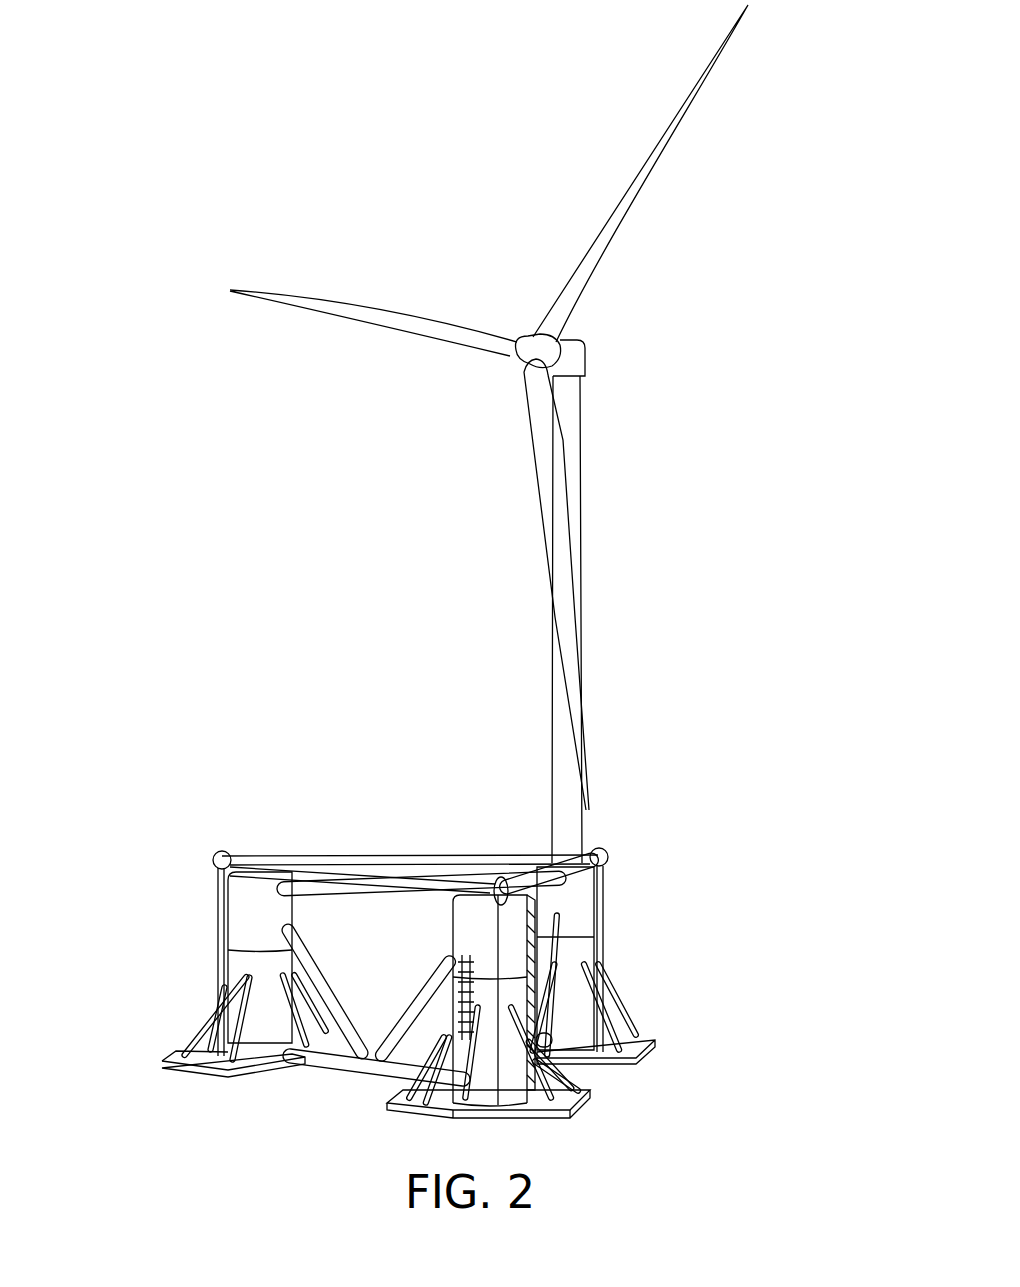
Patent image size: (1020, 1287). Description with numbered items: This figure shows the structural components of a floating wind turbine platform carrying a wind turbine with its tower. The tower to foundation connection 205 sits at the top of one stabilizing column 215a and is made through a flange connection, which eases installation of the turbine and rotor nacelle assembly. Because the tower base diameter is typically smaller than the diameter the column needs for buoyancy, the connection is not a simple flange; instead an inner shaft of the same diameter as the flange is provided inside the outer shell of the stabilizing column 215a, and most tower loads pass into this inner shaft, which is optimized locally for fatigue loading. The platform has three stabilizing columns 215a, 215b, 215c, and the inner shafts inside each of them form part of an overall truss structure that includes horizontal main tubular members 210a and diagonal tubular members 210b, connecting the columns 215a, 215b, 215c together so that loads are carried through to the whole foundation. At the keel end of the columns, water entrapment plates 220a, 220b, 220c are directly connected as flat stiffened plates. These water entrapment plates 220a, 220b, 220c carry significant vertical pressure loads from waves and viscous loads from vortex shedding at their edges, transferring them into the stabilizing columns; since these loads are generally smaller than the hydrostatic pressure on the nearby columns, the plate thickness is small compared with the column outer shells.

The tower to foundation connection 205 is at (569, 843).
The horizontal main tubular members 210a is at (560, 1033).
The diagonal tubular members 210b is at (415, 1000).
The stabilizing column 215a is at (585, 896).
The stabilizing column 215b is at (480, 915).
The stabilizing column 215c is at (240, 921).
The water entrapment plate 220a is at (590, 1098).
The water entrapment plate 220b is at (655, 1040).
The water entrapment plate 220c is at (160, 1060).